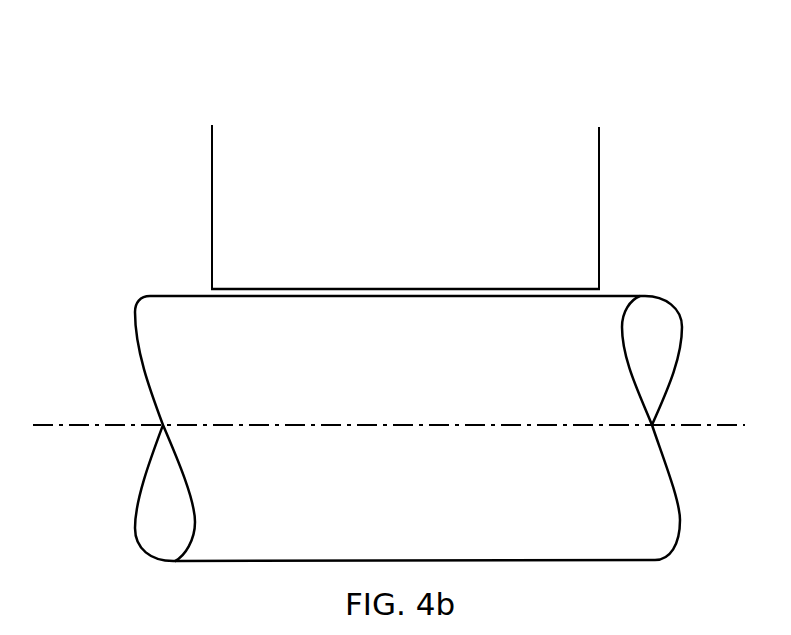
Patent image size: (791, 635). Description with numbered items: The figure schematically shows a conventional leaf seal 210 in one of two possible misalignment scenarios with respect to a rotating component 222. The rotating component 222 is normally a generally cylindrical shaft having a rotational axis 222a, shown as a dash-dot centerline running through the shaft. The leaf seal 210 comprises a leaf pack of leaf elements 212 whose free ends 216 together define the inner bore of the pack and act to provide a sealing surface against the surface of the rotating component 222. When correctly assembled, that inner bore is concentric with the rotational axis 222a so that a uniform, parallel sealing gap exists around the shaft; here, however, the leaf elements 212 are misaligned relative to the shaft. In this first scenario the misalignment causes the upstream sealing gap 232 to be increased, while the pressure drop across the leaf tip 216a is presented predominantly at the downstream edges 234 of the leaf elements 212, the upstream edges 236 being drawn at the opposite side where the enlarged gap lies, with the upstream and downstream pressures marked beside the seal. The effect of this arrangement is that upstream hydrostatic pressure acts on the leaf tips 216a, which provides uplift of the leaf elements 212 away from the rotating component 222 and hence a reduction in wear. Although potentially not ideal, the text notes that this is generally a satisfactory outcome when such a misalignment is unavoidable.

The leaf seal 210 is at (635, 69).
The leaf elements 212 is at (569, 127).
The free ends of the leaf elements 216 is at (431, 198).
The leaf tip 216a is at (375, 291).
The rotating component 222 is at (431, 500).
The rotational axis 222a is at (58, 425).
The upstream sealing gap 232 is at (212, 292).
The downstream edges 234 is at (600, 262).
The upstream pad edge 236 is at (211, 258).